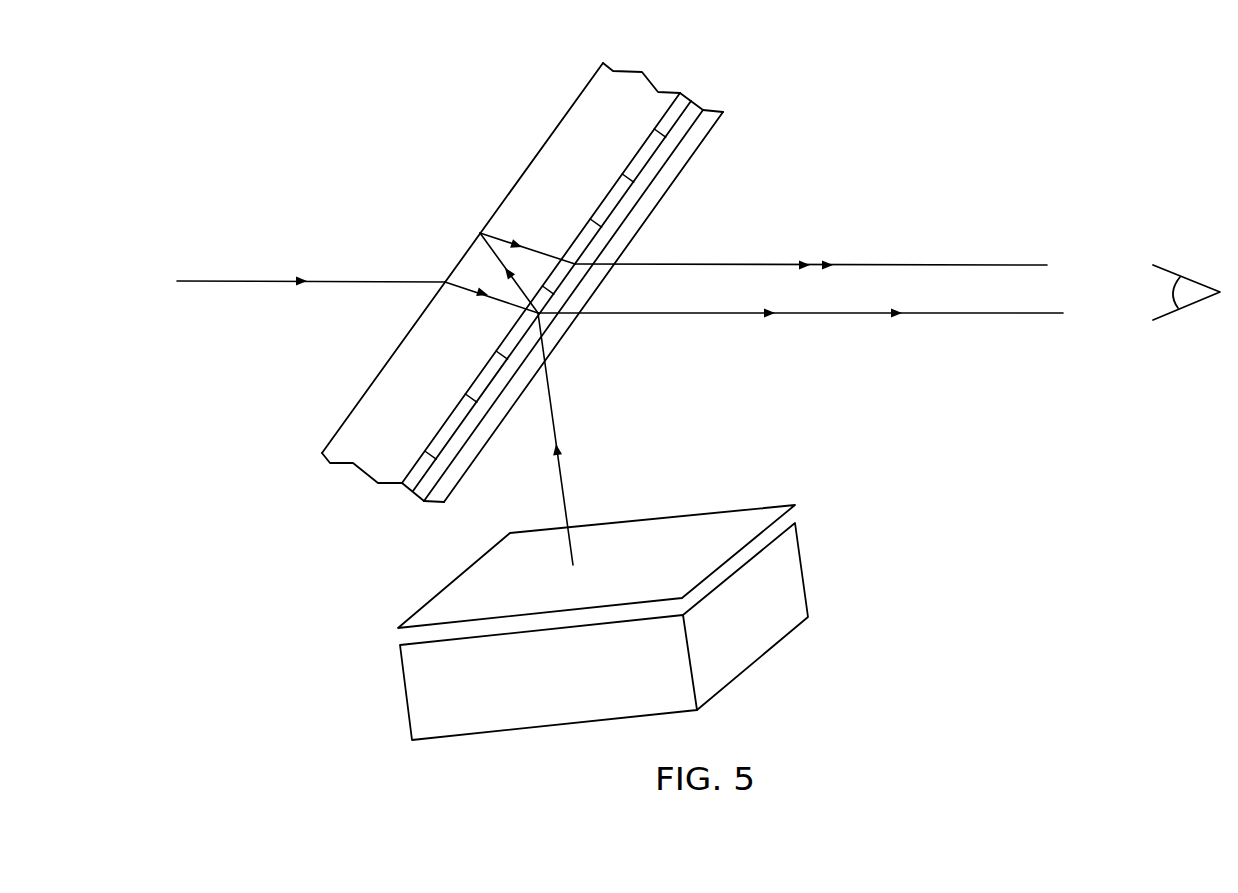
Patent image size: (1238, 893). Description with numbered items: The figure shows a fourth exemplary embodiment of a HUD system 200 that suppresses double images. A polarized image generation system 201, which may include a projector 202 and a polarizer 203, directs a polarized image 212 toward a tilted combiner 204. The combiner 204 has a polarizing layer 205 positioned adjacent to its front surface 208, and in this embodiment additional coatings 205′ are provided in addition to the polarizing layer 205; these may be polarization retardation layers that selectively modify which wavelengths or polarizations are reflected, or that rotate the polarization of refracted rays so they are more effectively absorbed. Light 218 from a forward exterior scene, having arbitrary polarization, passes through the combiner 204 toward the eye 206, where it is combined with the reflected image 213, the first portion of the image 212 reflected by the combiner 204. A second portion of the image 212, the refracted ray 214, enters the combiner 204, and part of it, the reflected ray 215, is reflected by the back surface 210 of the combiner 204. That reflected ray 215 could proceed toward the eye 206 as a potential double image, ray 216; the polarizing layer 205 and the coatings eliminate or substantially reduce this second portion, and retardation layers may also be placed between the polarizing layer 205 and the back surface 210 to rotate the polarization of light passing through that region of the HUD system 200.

The HUD system 200 is at (934, 124).
The polarized image generation system 201 is at (756, 489).
The projector 202 is at (402, 688).
The polarizer 203 is at (432, 597).
The combiner 204 is at (555, 148).
The polarizing layer 205 is at (410, 493).
The coating 205′ is at (697, 104).
The eye 206 is at (1190, 282).
The front surface 208 is at (472, 465).
The back surface 210 is at (380, 373).
The image 212 is at (567, 485).
The reflected image 213 is at (895, 315).
The refracted ray 214 is at (478, 243).
The reflected ray 215 is at (540, 250).
The double image ray 216 is at (950, 265).
The light 218 is at (203, 281).